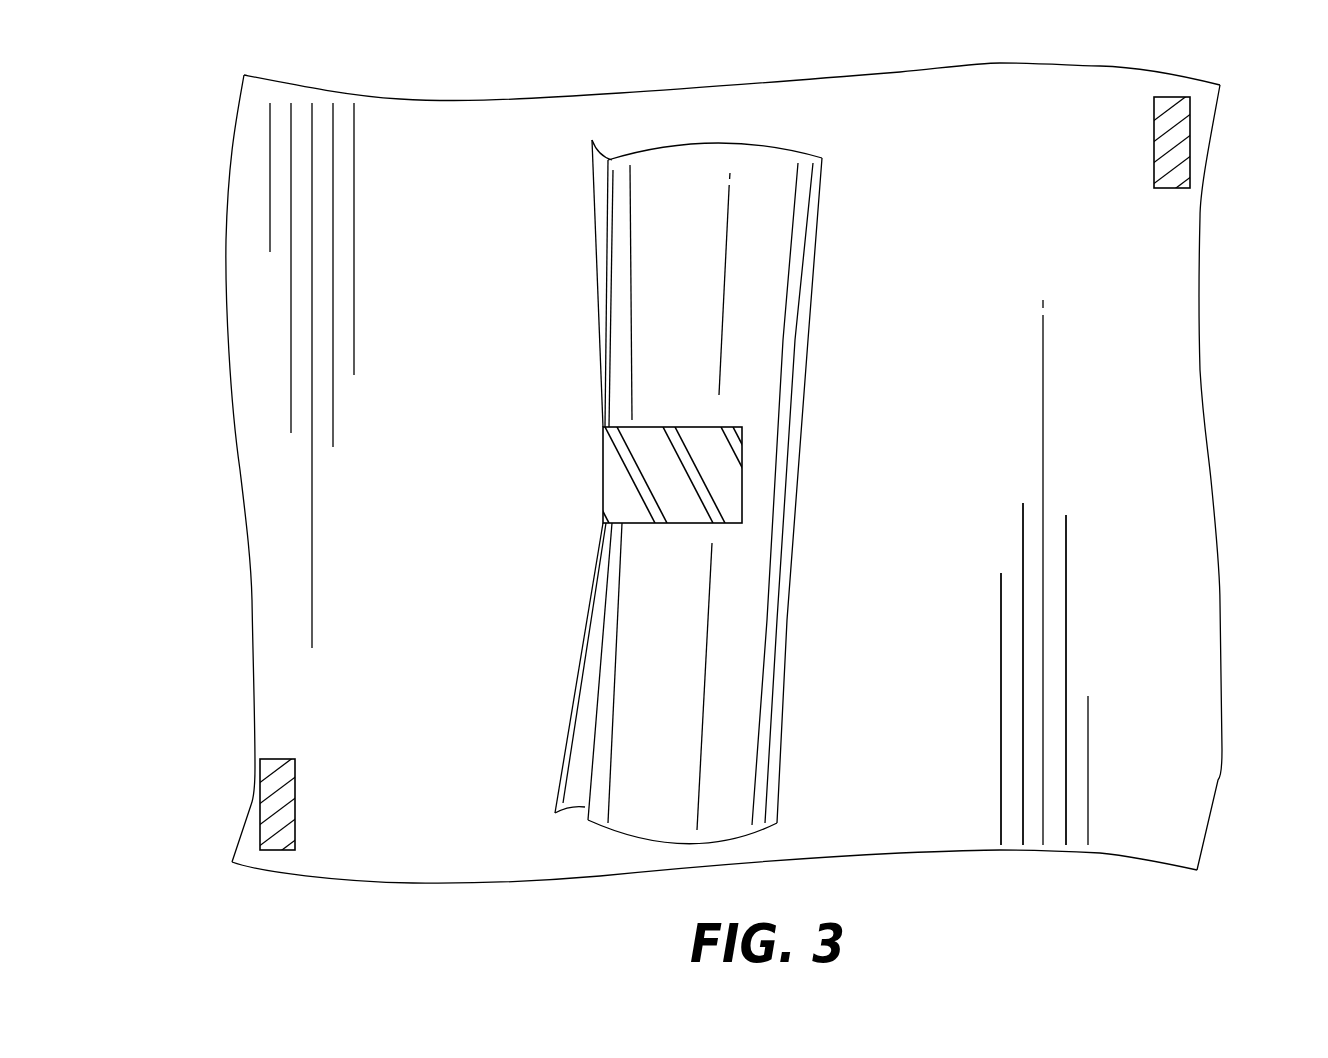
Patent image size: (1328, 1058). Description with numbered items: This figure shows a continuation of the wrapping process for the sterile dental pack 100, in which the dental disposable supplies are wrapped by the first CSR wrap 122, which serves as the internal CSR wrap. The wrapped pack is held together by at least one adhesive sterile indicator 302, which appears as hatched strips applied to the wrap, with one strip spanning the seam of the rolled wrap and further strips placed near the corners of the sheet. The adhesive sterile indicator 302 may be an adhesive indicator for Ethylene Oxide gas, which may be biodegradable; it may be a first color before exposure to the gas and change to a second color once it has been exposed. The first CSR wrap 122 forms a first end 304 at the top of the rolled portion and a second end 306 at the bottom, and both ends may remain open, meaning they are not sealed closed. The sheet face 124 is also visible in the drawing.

The sterile dental pack 100 is at (199, 105).
The first CSR wrap 122 is at (640, 338).
The second surface 124 is at (1147, 311).
The adhesive sterile indicator 302 is at (260, 797).
The first end 304 is at (682, 132).
The second end 306 is at (642, 848).